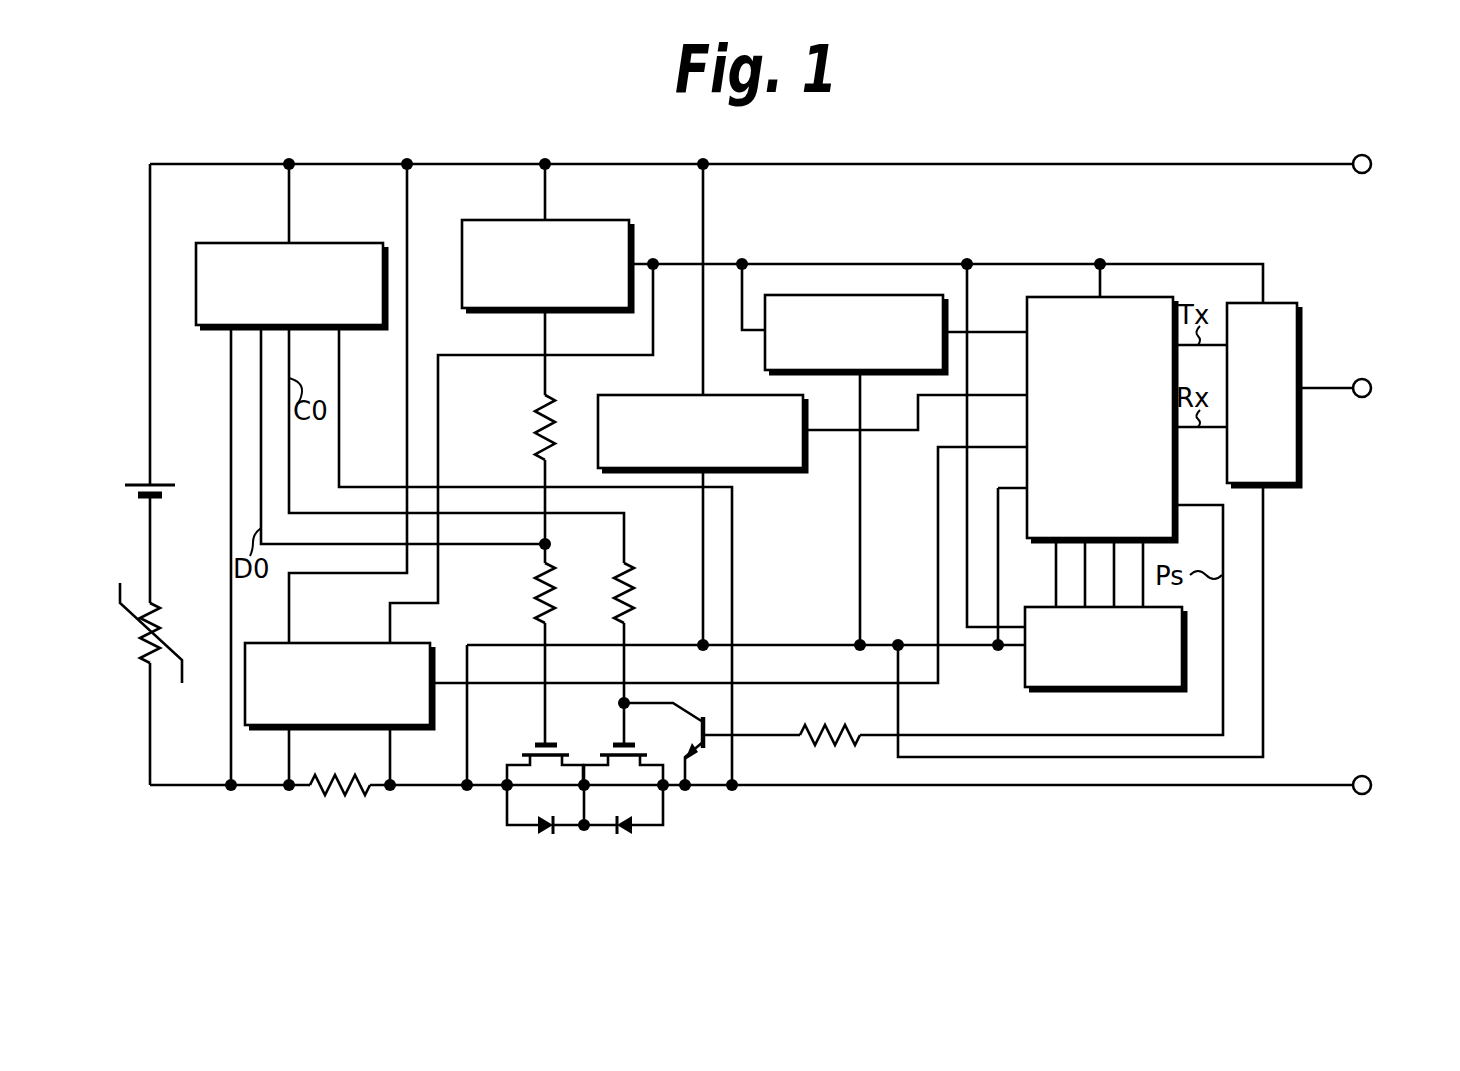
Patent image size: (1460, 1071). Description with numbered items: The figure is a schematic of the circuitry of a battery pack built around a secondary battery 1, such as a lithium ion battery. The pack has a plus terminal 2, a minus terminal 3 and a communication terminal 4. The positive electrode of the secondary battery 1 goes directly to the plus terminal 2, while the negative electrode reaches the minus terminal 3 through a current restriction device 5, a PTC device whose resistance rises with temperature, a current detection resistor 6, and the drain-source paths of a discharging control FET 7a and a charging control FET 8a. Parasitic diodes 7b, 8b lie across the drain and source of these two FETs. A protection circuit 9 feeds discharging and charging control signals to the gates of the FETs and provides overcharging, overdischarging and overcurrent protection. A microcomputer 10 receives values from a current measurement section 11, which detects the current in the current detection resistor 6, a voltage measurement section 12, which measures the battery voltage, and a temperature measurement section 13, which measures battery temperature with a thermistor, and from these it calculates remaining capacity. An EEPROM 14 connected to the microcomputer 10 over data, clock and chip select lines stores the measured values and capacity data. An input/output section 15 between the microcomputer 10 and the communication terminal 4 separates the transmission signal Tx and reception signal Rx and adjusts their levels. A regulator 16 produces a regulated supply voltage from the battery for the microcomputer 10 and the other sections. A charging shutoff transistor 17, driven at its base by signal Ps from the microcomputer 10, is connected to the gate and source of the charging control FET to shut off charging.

The secondary battery 1 is at (124, 500).
The plus terminal 2 is at (1372, 165).
The minus terminal 3 is at (1372, 786).
The communication terminal 4 is at (1372, 389).
The current restriction device 5 is at (136, 654).
The current detection resistor 6 is at (338, 796).
The discharging control field effect transistor 7a is at (527, 747).
The parasitic diode 7b is at (546, 834).
The charging control field effect transistor 8a is at (605, 747).
The parasitic diode 8b is at (623, 834).
The protection circuit 9 is at (251, 243).
The microcomputer 10 is at (1063, 297).
The current measurement section 11 is at (358, 643).
The voltage measurement section 12 is at (757, 471).
The temperature measurement section 13 is at (830, 371).
The EEPROM 14 is at (1025, 668).
The input/output section 15 is at (1283, 303).
The regulator 16 is at (489, 220).
The charging shutoff transistor 17 is at (704, 760).